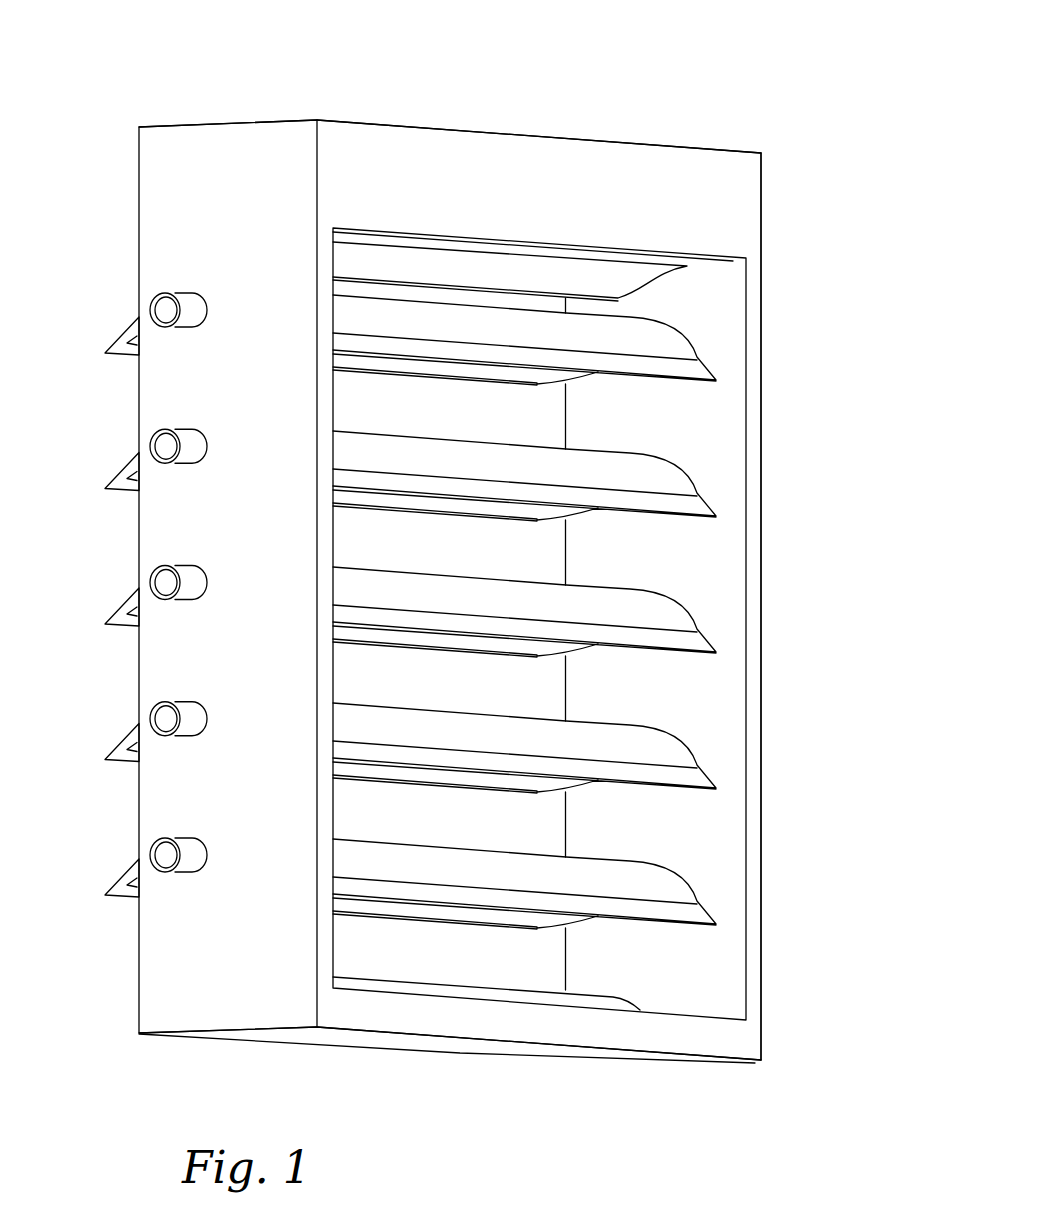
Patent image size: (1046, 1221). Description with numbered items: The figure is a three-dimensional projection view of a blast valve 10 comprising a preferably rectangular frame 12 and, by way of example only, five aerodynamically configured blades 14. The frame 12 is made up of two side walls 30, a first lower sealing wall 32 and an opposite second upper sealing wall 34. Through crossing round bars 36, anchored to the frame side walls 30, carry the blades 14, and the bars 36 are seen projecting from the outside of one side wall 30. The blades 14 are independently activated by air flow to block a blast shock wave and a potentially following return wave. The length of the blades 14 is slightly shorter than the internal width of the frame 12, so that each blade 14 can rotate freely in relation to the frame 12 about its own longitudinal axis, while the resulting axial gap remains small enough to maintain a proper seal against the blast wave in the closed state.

The blast valve 10 is at (756, 36).
The frame 12 is at (228, 124).
The aerodynamically configured blades 14 is at (700, 357).
The side walls 30 is at (139, 547).
The first lower sealing wall 32 is at (543, 1045).
The second upper sealing wall 34 is at (543, 137).
The through crossing round bars 36 is at (168, 292).